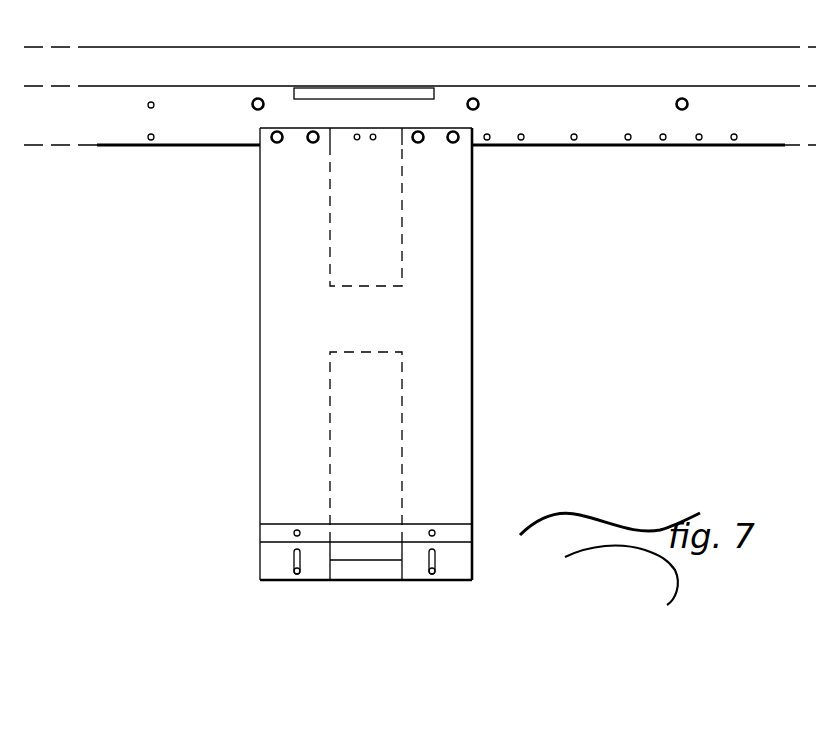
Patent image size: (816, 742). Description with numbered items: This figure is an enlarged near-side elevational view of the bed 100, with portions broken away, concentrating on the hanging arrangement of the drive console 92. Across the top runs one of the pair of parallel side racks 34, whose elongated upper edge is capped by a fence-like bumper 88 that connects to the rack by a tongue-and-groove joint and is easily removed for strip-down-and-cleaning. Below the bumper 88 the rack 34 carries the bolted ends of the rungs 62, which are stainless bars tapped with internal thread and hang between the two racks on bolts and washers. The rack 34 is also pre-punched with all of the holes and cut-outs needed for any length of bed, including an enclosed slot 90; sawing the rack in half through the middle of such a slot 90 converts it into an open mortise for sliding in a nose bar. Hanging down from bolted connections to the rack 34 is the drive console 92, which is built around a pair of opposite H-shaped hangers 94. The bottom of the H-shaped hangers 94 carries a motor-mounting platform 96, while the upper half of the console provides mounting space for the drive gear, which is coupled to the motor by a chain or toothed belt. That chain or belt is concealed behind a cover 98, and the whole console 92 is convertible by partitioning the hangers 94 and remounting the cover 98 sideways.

The side rack 34 is at (646, 138).
The rung 62 is at (468, 98).
The bumper 88 is at (590, 63).
The enclosed slot 90 is at (323, 95).
The drive console 92 is at (474, 410).
The H-shaped hanger 94 is at (402, 243).
The motor-mounting platform 96 is at (370, 571).
The cover 98 is at (447, 385).
The bed 100 is at (331, 375).